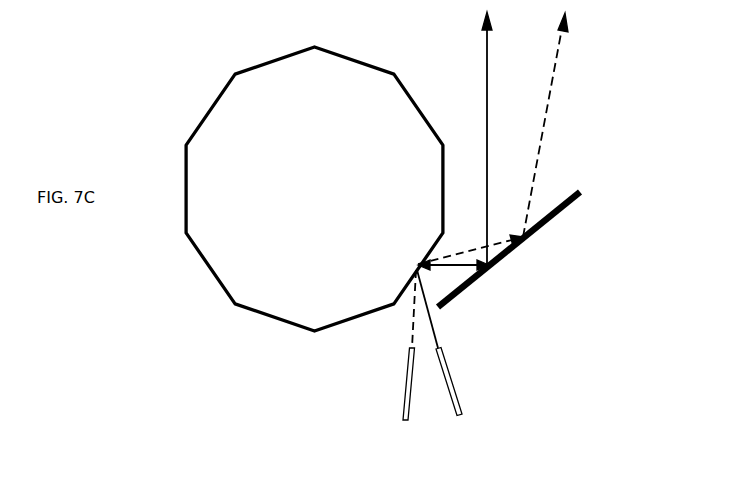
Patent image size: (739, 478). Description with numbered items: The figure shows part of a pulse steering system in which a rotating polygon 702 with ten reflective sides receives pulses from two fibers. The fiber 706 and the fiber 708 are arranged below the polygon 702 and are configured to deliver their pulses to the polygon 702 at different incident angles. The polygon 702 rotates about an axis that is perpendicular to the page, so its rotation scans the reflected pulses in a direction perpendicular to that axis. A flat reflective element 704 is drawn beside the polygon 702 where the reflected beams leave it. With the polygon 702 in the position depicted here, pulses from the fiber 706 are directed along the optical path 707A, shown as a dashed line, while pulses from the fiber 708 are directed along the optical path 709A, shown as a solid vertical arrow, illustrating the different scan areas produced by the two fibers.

The polygon 702 is at (335, 206).
The mirror 704 is at (491, 268).
The fiber 706 is at (402, 408).
The fiber 708 is at (460, 410).
The optical path 707A is at (517, 138).
The optical path 709A is at (451, 141).